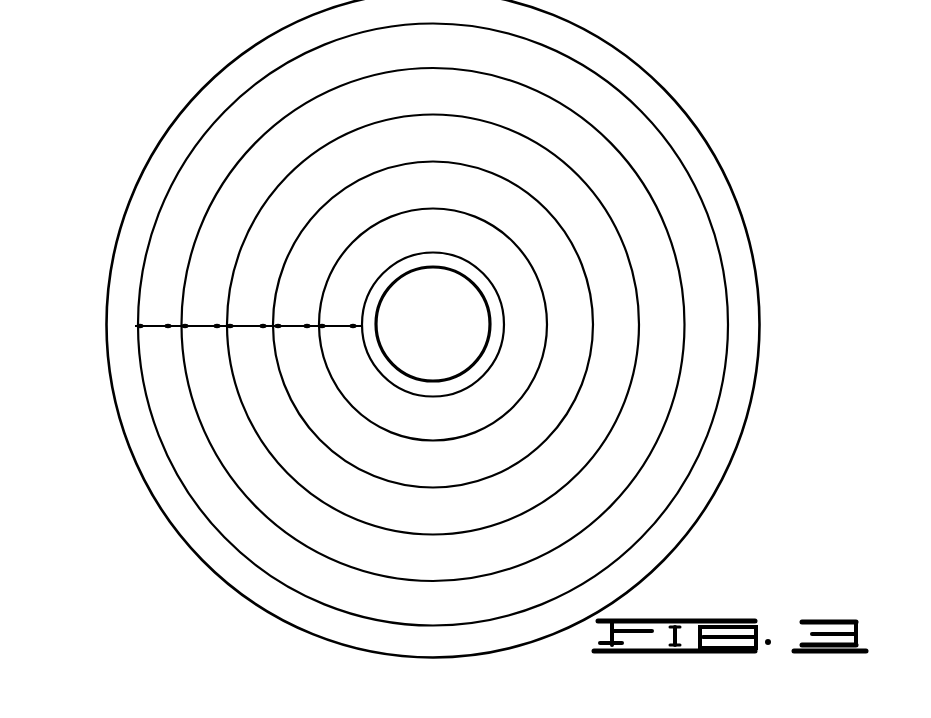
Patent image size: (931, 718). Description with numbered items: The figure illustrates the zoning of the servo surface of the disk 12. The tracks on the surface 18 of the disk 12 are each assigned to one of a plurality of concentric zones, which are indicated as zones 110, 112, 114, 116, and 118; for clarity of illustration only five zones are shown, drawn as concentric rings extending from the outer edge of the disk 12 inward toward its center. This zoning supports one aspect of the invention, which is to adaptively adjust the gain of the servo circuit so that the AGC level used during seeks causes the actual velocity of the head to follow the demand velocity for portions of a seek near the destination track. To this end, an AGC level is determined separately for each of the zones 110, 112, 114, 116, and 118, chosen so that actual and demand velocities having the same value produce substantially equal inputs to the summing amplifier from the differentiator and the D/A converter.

The disk 12 is at (698, 116).
The surface 18 is at (623, 190).
The zone 110 is at (150, 327).
The zone 112 is at (197, 327).
The zone 114 is at (240, 327).
The zone 116 is at (292, 327).
The zone 118 is at (333, 327).